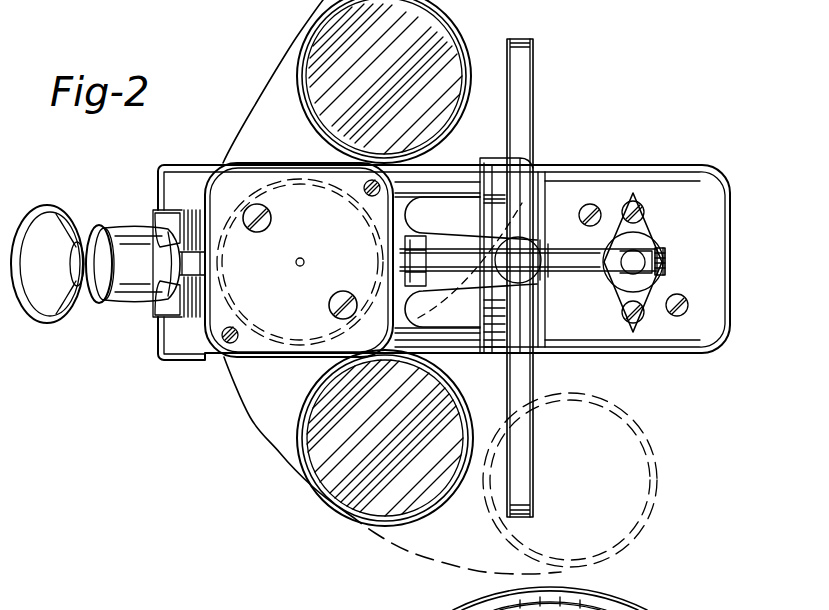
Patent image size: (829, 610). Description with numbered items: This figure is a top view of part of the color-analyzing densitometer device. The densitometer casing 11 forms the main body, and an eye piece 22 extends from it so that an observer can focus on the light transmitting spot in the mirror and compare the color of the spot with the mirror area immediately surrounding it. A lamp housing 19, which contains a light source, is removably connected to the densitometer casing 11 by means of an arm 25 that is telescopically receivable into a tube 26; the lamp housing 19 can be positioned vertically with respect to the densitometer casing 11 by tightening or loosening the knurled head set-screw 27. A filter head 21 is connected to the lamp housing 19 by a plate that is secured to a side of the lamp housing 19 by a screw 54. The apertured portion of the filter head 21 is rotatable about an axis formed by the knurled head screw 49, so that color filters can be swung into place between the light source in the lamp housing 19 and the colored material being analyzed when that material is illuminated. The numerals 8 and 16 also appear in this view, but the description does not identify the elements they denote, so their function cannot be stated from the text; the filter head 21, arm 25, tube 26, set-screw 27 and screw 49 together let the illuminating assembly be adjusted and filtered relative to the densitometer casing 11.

The film reel 8 is at (643, 492).
The densitometer casing 11 is at (730, 290).
The film strip 16 is at (534, 378).
The lamp housing 19 is at (222, 178).
The filter head 21 is at (243, 394).
The eye piece 22 is at (118, 232).
The arm 25 is at (556, 272).
The tube 26 is at (645, 251).
The knurled head set-screw 27 is at (665, 259).
The knurled head screw 49 is at (546, 250).
The screw 54 is at (424, 263).